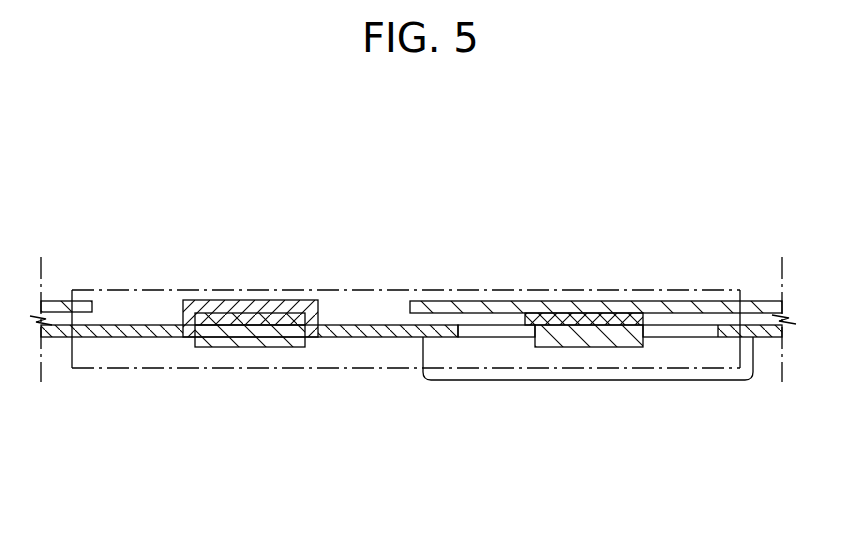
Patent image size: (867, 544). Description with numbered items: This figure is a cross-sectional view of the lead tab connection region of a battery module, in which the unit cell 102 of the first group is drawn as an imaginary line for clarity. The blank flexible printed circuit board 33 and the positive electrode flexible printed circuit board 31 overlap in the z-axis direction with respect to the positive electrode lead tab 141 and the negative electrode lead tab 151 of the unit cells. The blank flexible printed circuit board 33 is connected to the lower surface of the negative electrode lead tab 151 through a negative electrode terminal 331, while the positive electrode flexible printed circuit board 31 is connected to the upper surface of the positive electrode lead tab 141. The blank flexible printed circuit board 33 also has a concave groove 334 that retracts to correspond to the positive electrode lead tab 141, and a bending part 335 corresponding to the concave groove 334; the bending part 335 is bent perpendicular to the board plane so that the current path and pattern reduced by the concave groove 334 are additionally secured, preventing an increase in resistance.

The unit cell 102 is at (370, 289).
The positive electrode flexible printed circuit board 31 is at (705, 305).
The blank flexible printed circuit board 33 is at (123, 331).
The negative electrode terminal 331 is at (262, 308).
The negative electrode lead tab 151 is at (247, 343).
The concave groove 334 is at (495, 332).
The positive electrode lead tab 141 is at (582, 340).
The bending part 335 is at (700, 380).